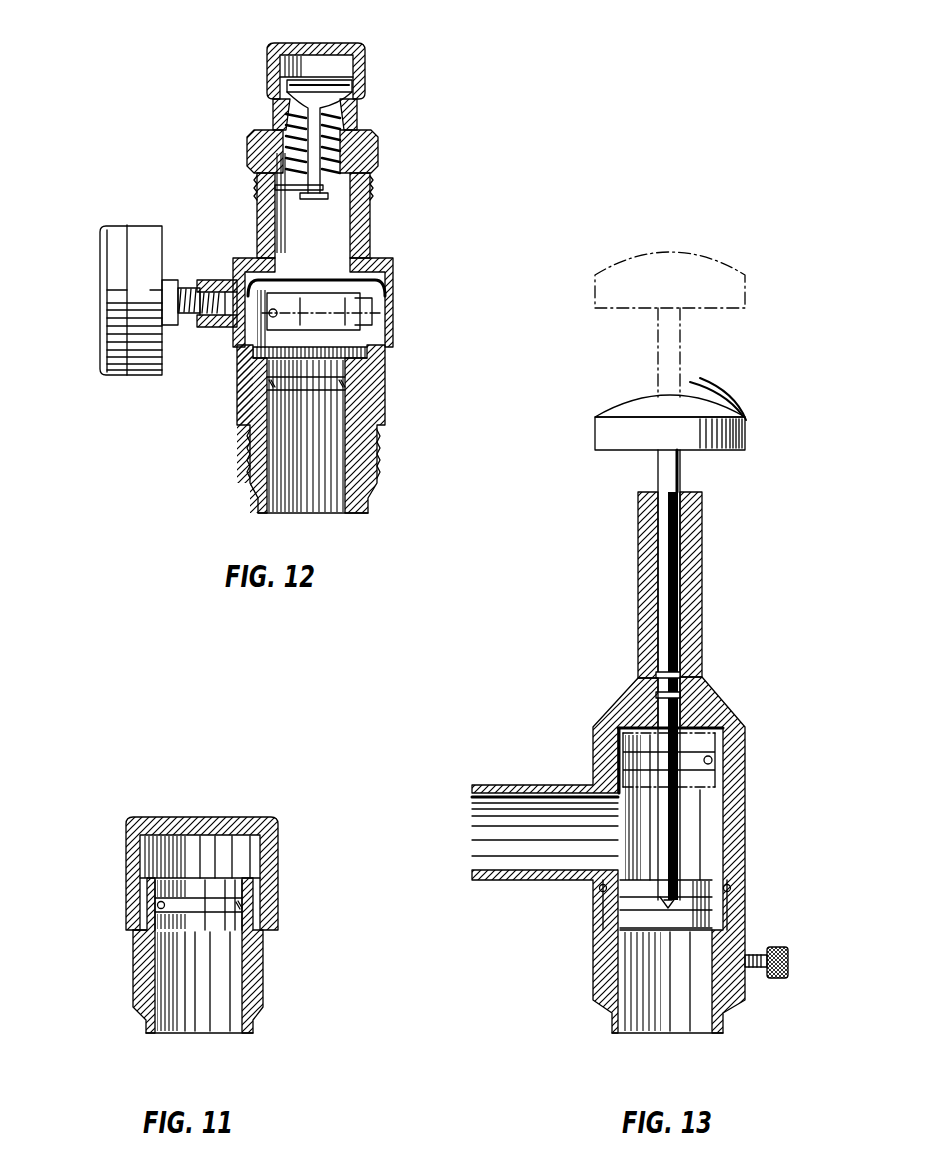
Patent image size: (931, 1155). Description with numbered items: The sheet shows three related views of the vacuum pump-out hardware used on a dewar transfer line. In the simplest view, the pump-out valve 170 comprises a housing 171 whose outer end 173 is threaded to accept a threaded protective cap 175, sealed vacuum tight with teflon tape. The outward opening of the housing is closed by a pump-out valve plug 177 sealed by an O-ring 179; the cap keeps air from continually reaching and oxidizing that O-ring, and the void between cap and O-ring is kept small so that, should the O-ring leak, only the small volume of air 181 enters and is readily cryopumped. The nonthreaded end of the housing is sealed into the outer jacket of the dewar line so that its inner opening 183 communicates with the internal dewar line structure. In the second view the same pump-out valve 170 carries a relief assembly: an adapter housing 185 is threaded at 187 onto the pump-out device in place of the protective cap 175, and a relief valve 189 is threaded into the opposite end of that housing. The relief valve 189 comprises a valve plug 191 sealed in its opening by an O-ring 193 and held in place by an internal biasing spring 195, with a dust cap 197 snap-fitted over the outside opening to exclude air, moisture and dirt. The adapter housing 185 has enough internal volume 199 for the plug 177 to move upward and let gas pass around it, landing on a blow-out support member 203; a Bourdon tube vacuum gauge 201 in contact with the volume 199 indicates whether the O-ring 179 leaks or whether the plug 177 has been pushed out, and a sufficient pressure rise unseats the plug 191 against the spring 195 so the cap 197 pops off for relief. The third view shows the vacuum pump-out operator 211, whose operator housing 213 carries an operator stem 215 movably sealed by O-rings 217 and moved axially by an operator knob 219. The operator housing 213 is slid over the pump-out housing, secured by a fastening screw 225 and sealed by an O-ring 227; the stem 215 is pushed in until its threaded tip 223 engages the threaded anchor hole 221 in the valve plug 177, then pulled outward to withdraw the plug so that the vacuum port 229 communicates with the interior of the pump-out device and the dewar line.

In FIG. 12, the pump-out valve 170 is at (367, 461).
In FIG. 11, the pump-out valve 170 is at (120, 1010).
In FIG. 11, the housing 171 is at (255, 976).
In FIG. 11, the outer end 173 is at (263, 906).
In FIG. 11, the protective cap 175 is at (272, 822).
In FIG. 12, the pump-out valve plug 177 is at (392, 284).
In FIG. 11, the pump-out valve plug 177 is at (135, 944).
In FIG. 13, the pump-out valve plug 177 is at (720, 901).
In FIG. 12, the O-ring 179 is at (360, 384).
In FIG. 11, the O-ring 179 is at (152, 912).
In FIG. 11, the volume of air 181 is at (231, 830).
In FIG. 11, the inner opening 183 is at (222, 1010).
In FIG. 12, the adapter housing 185 is at (386, 251).
In FIG. 12, the threaded connection 187 is at (373, 406).
In FIG. 12, the relief valve 189 is at (378, 149).
In FIG. 12, the valve plug 191 is at (366, 58).
In FIG. 12, the O-ring 193 is at (360, 97).
In FIG. 12, the internal biasing spring 195 is at (357, 122).
In FIG. 12, the dust cap 197 is at (357, 43).
In FIG. 12, the internal volume 199 is at (375, 323).
In FIG. 12, the Bourdon tube vacuum gauge 201 is at (140, 240).
In FIG. 12, the blow-out support member 203 is at (394, 271).
In FIG. 13, the vacuum pump-out operator 211 is at (725, 587).
In FIG. 13, the operator housing 213 is at (715, 697).
In FIG. 13, the operator stem 215 is at (676, 521).
In FIG. 13, the O-rings 217 is at (656, 695).
In FIG. 13, the operator knob 219 is at (745, 437).
In FIG. 13, the threaded anchor hole 221 is at (688, 873).
In FIG. 13, the threaded tip 223 is at (613, 879).
In FIG. 13, the fastening screw 225 is at (789, 956).
In FIG. 13, the O-ring 227 is at (727, 890).
In FIG. 13, the vacuum port 229 is at (523, 786).